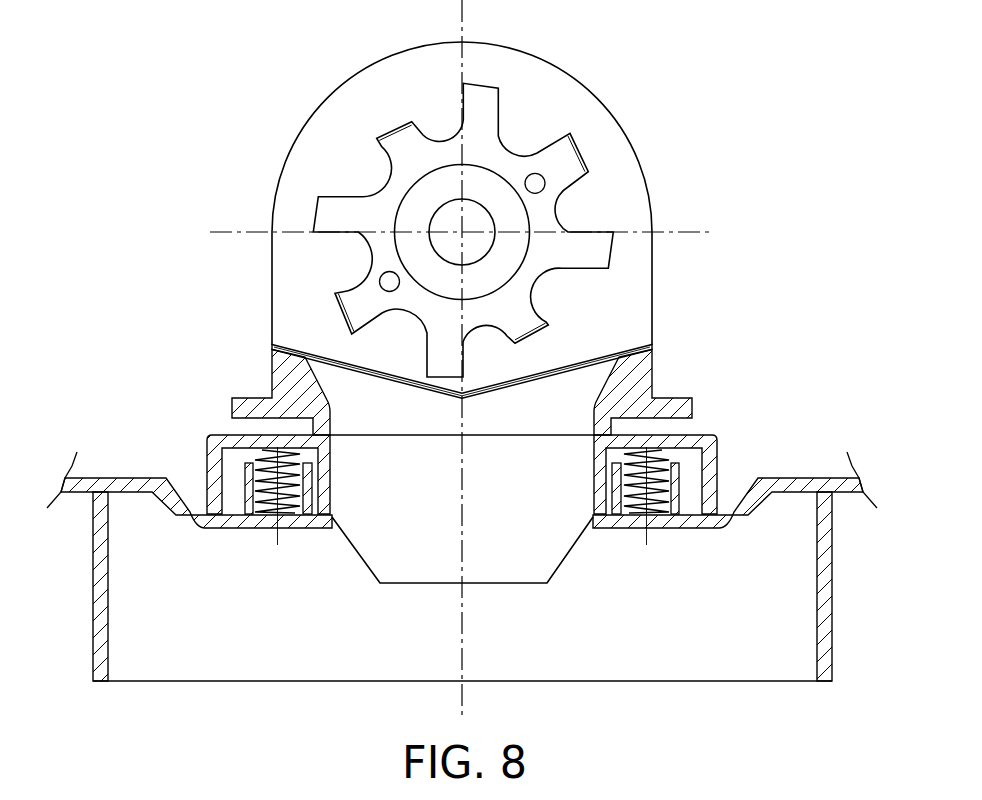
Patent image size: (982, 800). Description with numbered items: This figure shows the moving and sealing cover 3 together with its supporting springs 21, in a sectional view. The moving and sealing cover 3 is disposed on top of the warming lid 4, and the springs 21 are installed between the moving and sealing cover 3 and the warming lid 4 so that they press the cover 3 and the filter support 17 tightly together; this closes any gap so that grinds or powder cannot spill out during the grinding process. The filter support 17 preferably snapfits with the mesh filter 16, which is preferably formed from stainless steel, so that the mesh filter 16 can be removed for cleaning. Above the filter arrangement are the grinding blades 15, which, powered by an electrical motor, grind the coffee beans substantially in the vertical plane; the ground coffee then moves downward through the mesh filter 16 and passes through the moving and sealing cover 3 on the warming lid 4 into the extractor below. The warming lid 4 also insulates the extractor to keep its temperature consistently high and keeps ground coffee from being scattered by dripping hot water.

The grinding blades 15 is at (480, 206).
The mesh filter 16 is at (396, 300).
The filter support 17 is at (433, 364).
The moving and sealing cover 3 is at (425, 420).
The warming lid 4 is at (462, 526).
The springs 21 is at (514, 466).